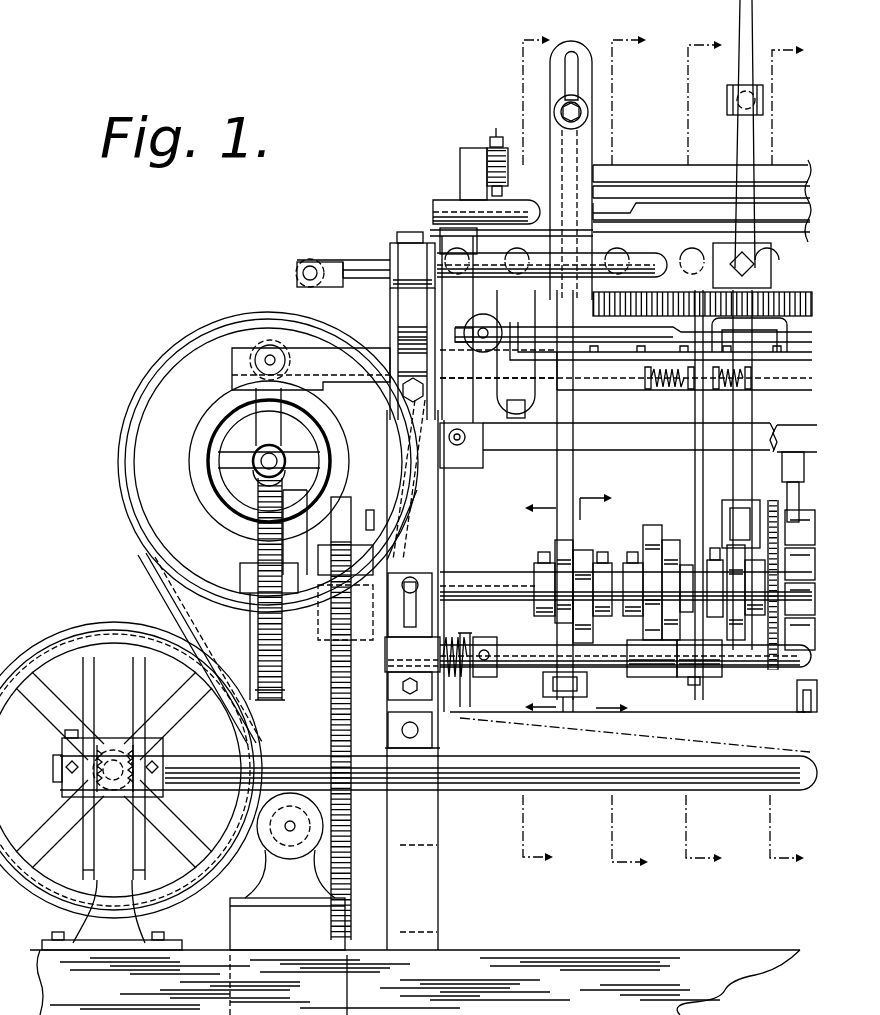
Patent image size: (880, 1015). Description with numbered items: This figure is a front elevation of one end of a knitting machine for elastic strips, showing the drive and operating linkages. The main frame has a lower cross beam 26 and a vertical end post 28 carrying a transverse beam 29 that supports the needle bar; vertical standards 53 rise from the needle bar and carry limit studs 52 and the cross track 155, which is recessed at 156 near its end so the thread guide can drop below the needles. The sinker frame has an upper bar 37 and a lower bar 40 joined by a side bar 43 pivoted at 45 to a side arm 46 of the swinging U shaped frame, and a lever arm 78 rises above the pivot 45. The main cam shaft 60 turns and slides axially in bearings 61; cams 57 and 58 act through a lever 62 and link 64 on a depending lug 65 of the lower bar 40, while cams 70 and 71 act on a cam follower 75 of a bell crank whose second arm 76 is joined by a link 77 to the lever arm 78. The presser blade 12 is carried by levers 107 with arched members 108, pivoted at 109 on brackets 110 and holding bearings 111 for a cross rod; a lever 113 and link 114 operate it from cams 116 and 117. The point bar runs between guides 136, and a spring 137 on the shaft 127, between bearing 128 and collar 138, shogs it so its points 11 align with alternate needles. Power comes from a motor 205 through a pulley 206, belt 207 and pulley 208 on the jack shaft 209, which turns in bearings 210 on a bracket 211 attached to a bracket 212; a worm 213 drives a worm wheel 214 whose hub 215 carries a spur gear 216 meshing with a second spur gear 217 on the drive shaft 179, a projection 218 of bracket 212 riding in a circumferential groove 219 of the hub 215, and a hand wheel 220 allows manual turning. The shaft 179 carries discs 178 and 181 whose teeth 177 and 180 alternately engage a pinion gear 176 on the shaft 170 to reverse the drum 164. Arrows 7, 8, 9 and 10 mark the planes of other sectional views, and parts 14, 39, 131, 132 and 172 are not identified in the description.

The section line 7 is at (791, 456).
The section line 8 is at (709, 453).
The section line 9 is at (636, 451).
The section line 10 is at (548, 444).
The points 11 is at (546, 500).
The presser blade 12 is at (608, 595).
The clamp block 14 is at (612, 688).
The lower cross beam 26 is at (584, 948).
The vertical end post 28 is at (438, 860).
The transverse beam 29 is at (452, 464).
The bar 37 is at (618, 256).
The block 39 is at (778, 246).
The lower bar 40 is at (640, 448).
The side bar 43 is at (498, 474).
The pivot 45 is at (433, 212).
The side arm 46 is at (508, 202).
The limit stud 52 is at (496, 130).
The vertical standard 53 is at (458, 166).
The cam 57 is at (770, 538).
The cam 58 is at (796, 518).
The main cam shaft 60 is at (485, 580).
The bearing 61 is at (510, 560).
The lever 62 is at (748, 658).
The link 64 is at (796, 656).
The depending lug 65 is at (788, 448).
The cam 70 is at (554, 556).
The cam 71 is at (585, 552).
The cam follower 75 is at (568, 708).
The second arm 76 is at (576, 470).
The link 77 is at (588, 112).
The lever arm 78 is at (582, 48).
The lever 107 is at (400, 328).
The arched member 108 is at (402, 300).
The pivot 109 is at (311, 398).
The bracket 110 is at (408, 480).
The bearing 111 is at (400, 256).
The lever 113 is at (753, 28).
The link 114 is at (738, 90).
The cam 116 is at (703, 538).
The cam 117 is at (752, 532).
The shaft 127 is at (503, 670).
The bearing 128 is at (412, 654).
The disc 131 is at (652, 522).
The disc 132 is at (670, 538).
The guide 136 is at (548, 392).
The spring 137 is at (455, 640).
The collar 138 is at (483, 638).
The cross track 155 is at (678, 222).
The recess 156 is at (610, 213).
The drum 164 is at (66, 632).
The shaft 170 is at (56, 788).
The rail end 172 is at (811, 168).
The pinion gear 176 is at (110, 736).
The teeth 177 is at (145, 862).
The disc 178 is at (145, 674).
The power driven shaft 179 is at (193, 790).
The teeth 180 is at (88, 712).
The second disc 181 is at (83, 866).
The motor 205 is at (292, 870).
The pulley 206 is at (274, 850).
The belt 207 is at (162, 598).
The pulley 208 is at (206, 332).
The jack shaft 209 is at (258, 468).
The bearing 210 is at (226, 442).
The bracket 211 is at (305, 480).
The bracket 212 is at (330, 640).
The worm 213 is at (278, 450).
The worm wheel 214 is at (283, 680).
The hub 215 is at (258, 630).
The spur gear 216 is at (346, 500).
The second spur gear 217 is at (330, 714).
The projection 218 is at (258, 550).
The circumferential groove 219 is at (294, 602).
The hand wheel 220 is at (190, 466).